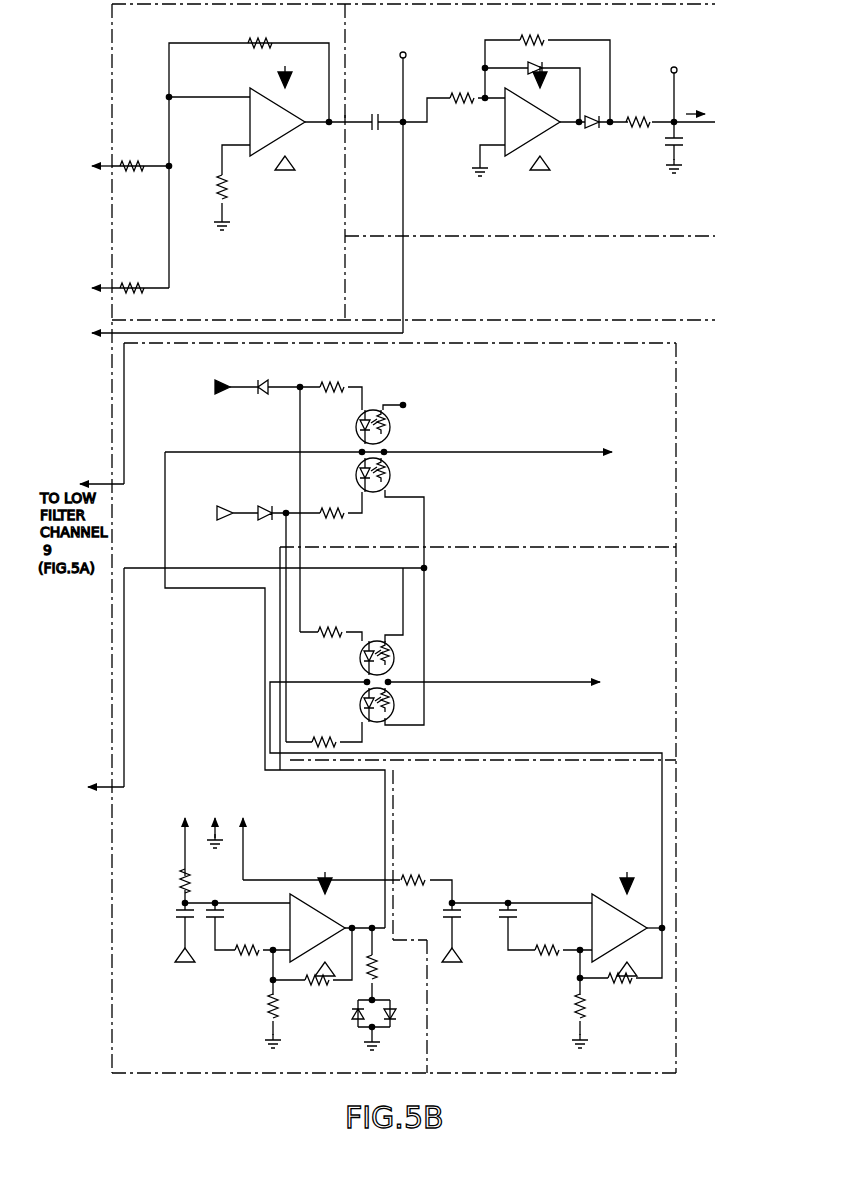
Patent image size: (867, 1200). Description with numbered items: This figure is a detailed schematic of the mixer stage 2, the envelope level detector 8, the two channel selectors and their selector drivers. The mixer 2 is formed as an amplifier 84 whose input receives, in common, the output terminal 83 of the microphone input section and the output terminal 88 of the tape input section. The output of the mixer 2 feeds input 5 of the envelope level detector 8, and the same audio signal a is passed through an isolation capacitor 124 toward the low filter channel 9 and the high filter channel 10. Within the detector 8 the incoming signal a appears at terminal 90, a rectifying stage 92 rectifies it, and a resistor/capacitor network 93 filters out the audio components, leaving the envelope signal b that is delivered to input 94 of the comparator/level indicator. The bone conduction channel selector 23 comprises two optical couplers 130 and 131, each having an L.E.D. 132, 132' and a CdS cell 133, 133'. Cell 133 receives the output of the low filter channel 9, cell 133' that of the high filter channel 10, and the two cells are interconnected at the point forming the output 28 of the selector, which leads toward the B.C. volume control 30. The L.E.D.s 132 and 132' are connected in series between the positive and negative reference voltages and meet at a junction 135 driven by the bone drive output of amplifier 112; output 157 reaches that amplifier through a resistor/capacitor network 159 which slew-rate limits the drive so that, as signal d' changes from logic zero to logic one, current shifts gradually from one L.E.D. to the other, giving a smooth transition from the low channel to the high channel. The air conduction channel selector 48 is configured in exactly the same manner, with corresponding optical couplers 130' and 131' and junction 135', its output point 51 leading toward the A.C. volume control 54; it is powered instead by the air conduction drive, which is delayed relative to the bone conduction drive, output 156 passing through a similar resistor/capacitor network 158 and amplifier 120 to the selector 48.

The mixer 2 is at (242, 151).
The envelope level detector 8 is at (569, 171).
The input 5 is at (351, 114).
The isolation capacitor 124 is at (383, 120).
The amplifier 84 is at (260, 148).
The terminal 90 is at (405, 60).
The rectifying stage 92 is at (533, 153).
The resistor/capacitor network 93 is at (668, 133).
The input 94 is at (728, 104).
The output terminal 83 is at (77, 148).
The output terminal 88 is at (79, 270).
The low filter channel 9 is at (218, 372).
The high filter channel 10 is at (81, 724).
The A.C. channel selector 48 is at (399, 527).
The B.C. channel selector 23 is at (393, 690).
The CdS cell of optocoupler OP1 130' is at (360, 395).
The CdS cell of optocoupler OP2 131' is at (369, 495).
The junction node of OP1 and OP2 135' is at (342, 442).
The output line to A.C. volume control 51 is at (386, 452).
The A.C. volume control 54 is at (519, 478).
The optical coupler 130 is at (360, 624).
The optical coupler 131 is at (368, 720).
The light emitting diode 132 is at (343, 661).
The light emitting diode 132' is at (345, 714).
The CdS cell 133 is at (444, 632).
The CdS cell 133' is at (444, 700).
The junction 135 is at (466, 796).
The output 28 is at (388, 682).
The B.C. volume control 30 is at (537, 666).
The amplifier 120 is at (287, 924).
The amplifier 112 is at (544, 971).
The output 156 is at (171, 824).
The output 157 is at (300, 838).
The resistor/capacitor network 158 is at (180, 907).
The resistor/capacitor network 159 is at (456, 901).